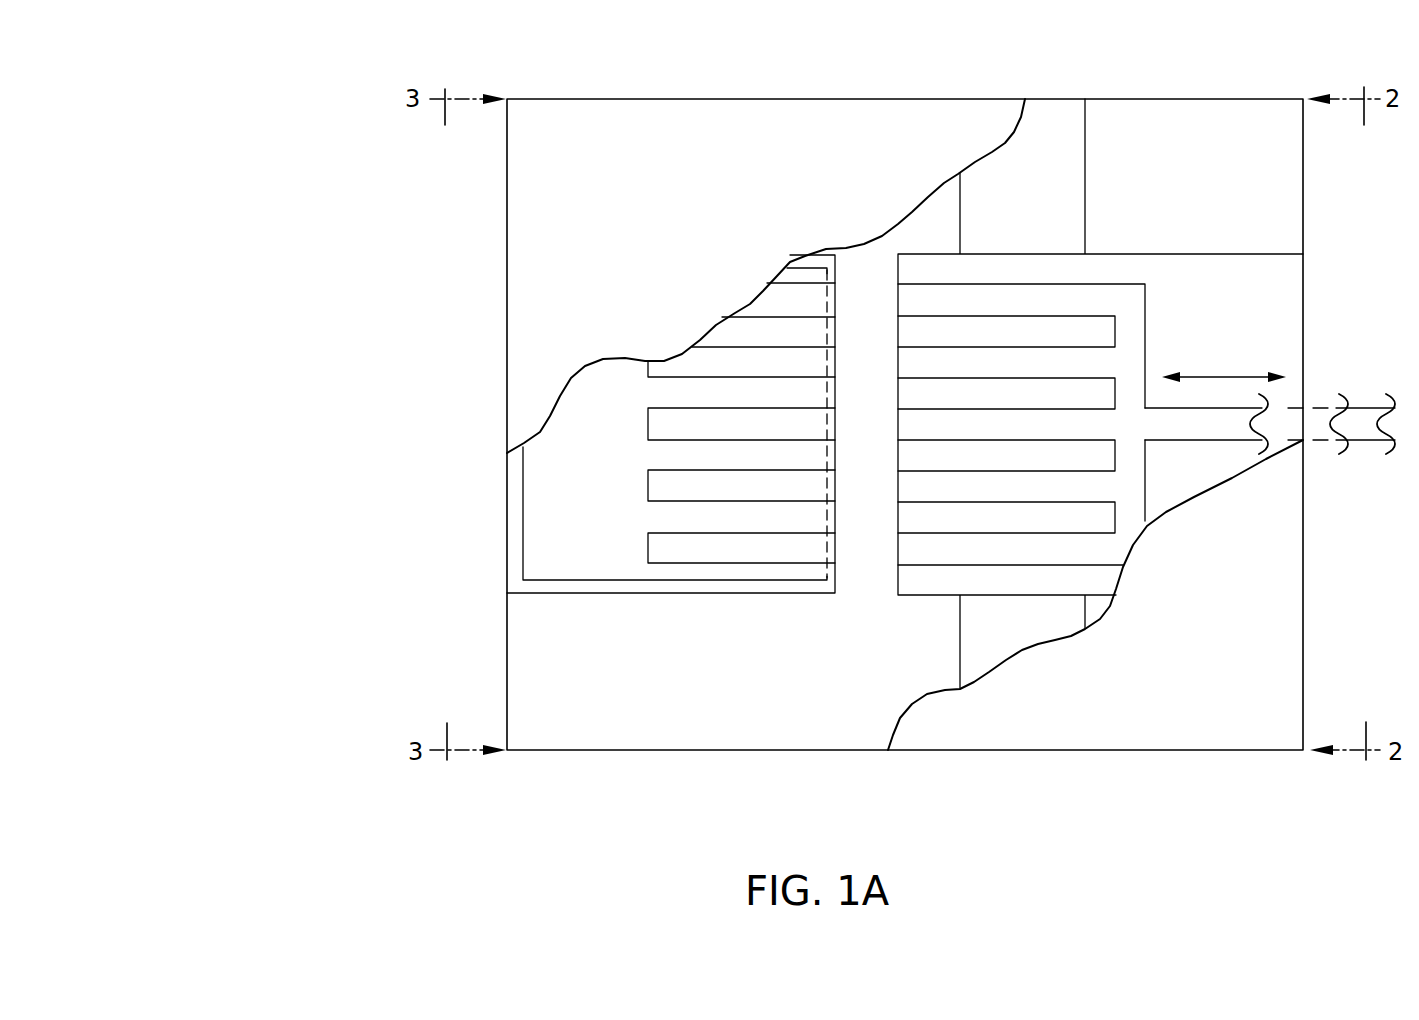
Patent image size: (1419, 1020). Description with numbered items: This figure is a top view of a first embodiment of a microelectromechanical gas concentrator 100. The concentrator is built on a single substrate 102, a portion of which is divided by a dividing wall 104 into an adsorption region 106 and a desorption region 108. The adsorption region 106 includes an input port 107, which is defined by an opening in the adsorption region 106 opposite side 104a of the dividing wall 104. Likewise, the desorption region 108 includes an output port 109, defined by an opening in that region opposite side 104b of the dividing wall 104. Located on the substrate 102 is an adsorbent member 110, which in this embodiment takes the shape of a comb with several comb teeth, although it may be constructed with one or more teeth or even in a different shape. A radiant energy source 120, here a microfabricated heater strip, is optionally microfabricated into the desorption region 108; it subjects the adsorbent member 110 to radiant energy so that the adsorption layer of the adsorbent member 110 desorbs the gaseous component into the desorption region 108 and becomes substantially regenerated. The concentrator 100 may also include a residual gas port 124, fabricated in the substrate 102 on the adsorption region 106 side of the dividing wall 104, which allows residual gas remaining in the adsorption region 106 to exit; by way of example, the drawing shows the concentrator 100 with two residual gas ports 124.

The microelectromechanical gas concentrator 100 is at (398, 299).
The substrate 102 is at (762, 122).
The dividing wall 104 is at (867, 567).
The side of the dividing wall 104a is at (897, 558).
The side of the dividing wall 104b is at (835, 548).
The adsorption region 106 is at (1265, 280).
The input port 107 is at (1300, 313).
The desorption region 108 is at (570, 422).
The output port 109 is at (507, 485).
The adsorbent member 110 is at (1200, 428).
The radiant energy source 120 is at (523, 547).
The residual gas port 124 is at (1050, 120).